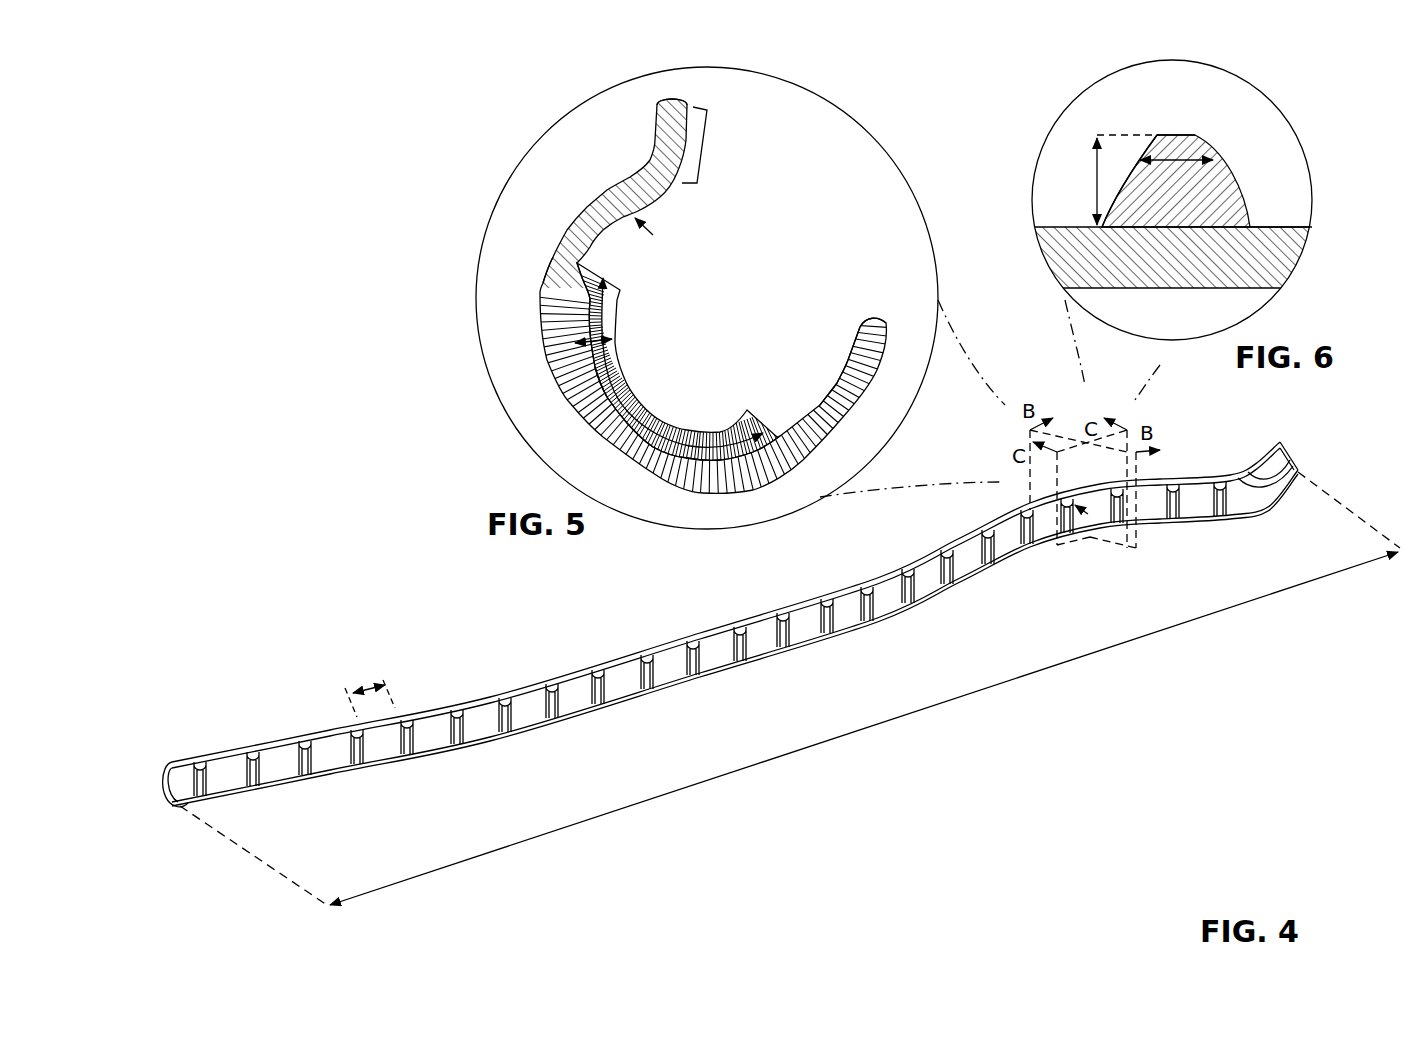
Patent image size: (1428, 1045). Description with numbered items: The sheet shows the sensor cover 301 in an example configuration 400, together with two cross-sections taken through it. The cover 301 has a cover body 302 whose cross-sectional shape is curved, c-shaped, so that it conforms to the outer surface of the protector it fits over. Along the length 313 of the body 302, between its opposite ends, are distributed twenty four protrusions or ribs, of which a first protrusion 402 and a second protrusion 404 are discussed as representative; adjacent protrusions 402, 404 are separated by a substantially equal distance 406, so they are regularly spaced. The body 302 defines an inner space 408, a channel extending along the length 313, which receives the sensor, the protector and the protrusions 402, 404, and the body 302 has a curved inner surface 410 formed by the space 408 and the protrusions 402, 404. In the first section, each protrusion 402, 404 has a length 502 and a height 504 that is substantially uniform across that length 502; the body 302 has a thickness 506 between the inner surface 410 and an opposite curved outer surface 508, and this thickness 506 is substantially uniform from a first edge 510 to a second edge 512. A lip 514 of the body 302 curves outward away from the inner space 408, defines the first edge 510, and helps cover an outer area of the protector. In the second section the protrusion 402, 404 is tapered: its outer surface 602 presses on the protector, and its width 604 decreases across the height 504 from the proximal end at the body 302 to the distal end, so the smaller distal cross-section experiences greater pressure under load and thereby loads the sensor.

In FIG. 4, the sensor cover 301 is at (230, 676).
In FIG. 5, the sensor cover 301 is at (848, 142).
In FIG. 6, the sensor cover 301 is at (1280, 153).
In FIG. 4, the cover body 302 is at (175, 763).
In FIG. 5, the cover body 302 is at (727, 491).
In FIG. 6, the cover body 302 is at (1188, 268).
In FIG. 4, the length 313 is at (885, 735).
In FIG. 4, the example configuration 400 is at (222, 215).
In FIG. 4, the first protrusion 402 is at (353, 740).
In FIG. 5, the first protrusion 402 is at (650, 393).
In FIG. 6, the first protrusion 402 is at (1218, 211).
In FIG. 4, the second protrusion 404 is at (412, 724).
In FIG. 5, the second protrusion 404 is at (682, 362).
In FIG. 6, the second protrusion 404 is at (1129, 181).
In FIG. 4, the distance 406 is at (370, 688).
In FIG. 4, the inner space 408 is at (172, 787).
In FIG. 5, the inner space 408 is at (738, 262).
In FIG. 4, the inner surface 410 is at (665, 676).
In FIG. 5, the inner surface 410 is at (820, 400).
In FIG. 6, the inner surface 410 is at (1273, 225).
In FIG. 5, the length of protrusion 502 is at (593, 426).
In FIG. 5, the height 504 is at (578, 338).
In FIG. 6, the height 504 is at (1097, 170).
In FIG. 5, the thickness of body 506 is at (605, 186).
In FIG. 5, the outer surface 508 is at (548, 250).
In FIG. 5, the first edge 510 is at (670, 100).
In FIG. 5, the second edge 512 is at (880, 322).
In FIG. 5, the lip 514 is at (703, 150).
In FIG. 6, the outer surface of protrusion 602 is at (1175, 135).
In FIG. 6, the width 604 is at (1182, 158).